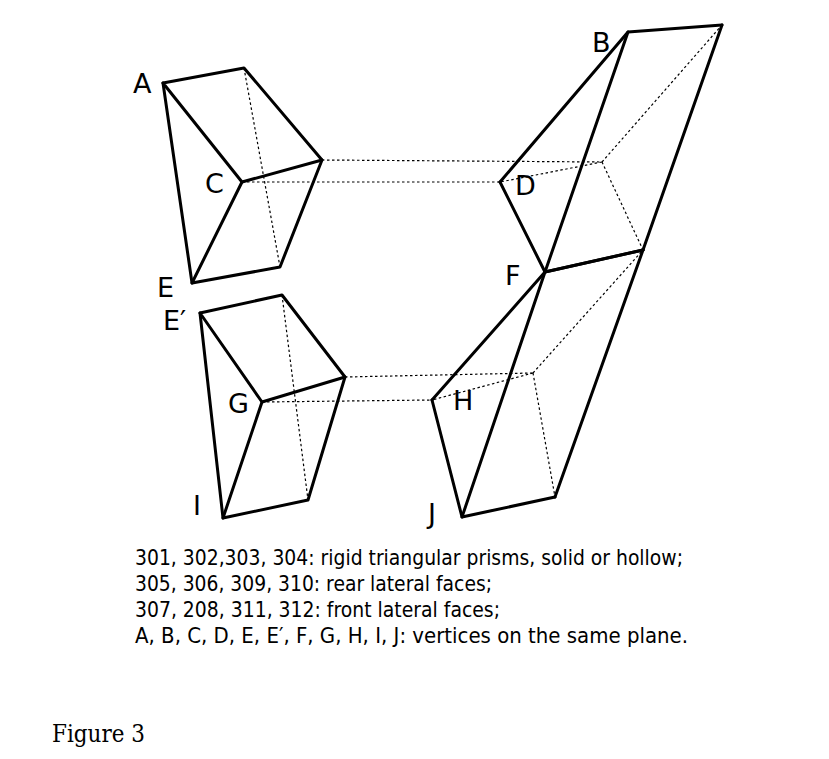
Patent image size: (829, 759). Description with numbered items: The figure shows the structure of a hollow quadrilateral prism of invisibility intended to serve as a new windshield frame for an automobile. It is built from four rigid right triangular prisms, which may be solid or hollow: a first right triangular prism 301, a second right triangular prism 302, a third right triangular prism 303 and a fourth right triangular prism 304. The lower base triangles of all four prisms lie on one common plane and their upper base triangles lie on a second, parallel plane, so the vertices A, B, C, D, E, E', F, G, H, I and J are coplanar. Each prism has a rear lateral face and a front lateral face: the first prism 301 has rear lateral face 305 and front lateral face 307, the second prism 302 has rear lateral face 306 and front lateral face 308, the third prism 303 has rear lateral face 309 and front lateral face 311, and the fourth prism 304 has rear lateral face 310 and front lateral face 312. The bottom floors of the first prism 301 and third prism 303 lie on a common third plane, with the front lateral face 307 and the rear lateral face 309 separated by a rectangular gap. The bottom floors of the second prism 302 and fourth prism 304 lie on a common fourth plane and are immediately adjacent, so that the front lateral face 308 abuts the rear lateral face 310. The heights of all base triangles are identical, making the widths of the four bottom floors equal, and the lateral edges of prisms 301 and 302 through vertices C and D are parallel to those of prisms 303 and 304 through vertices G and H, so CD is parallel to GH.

The first right triangular prism 301 is at (236, 175).
The second right triangular prism 302 is at (543, 148).
The third right triangular prism 303 is at (249, 399).
The fourth right triangular prism 304 is at (523, 383).
The rear lateral face 305 is at (240, 130).
The rear lateral face 306 is at (580, 120).
The front lateral face 307 is at (263, 245).
The front lateral face 308 is at (567, 197).
The rear lateral face 309 is at (280, 335).
The rear lateral face 310 is at (513, 337).
The front lateral face 311 is at (290, 443).
The front lateral face 312 is at (475, 448).